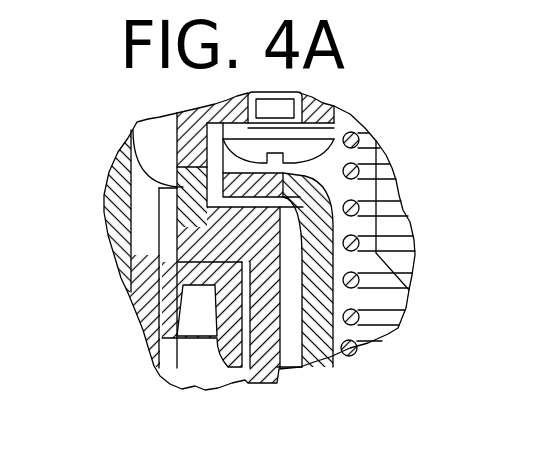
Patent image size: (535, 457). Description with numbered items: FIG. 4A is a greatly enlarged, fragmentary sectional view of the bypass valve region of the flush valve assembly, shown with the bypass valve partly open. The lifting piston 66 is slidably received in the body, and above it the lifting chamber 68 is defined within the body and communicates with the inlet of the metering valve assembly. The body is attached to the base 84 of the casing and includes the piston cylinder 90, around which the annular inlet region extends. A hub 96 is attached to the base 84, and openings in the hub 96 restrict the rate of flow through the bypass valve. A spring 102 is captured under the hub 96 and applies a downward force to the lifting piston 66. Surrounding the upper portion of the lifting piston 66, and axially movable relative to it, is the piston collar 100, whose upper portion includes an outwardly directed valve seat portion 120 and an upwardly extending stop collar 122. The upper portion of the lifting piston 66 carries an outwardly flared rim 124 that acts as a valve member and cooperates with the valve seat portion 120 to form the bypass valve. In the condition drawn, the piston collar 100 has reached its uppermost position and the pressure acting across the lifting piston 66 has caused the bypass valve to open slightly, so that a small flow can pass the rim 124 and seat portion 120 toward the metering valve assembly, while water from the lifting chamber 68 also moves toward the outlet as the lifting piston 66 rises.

The lifting piston 66 is at (310, 355).
The lifting chamber 68 is at (370, 160).
The base 84 is at (110, 210).
The piston cylinder 90 is at (138, 316).
The hub 96 is at (336, 108).
The piston collar 100 is at (263, 386).
The spring 102 is at (388, 248).
The valve seat portion 120 is at (210, 223).
The stop collar 122 is at (103, 157).
The outwardly flared rim 124 is at (237, 182).